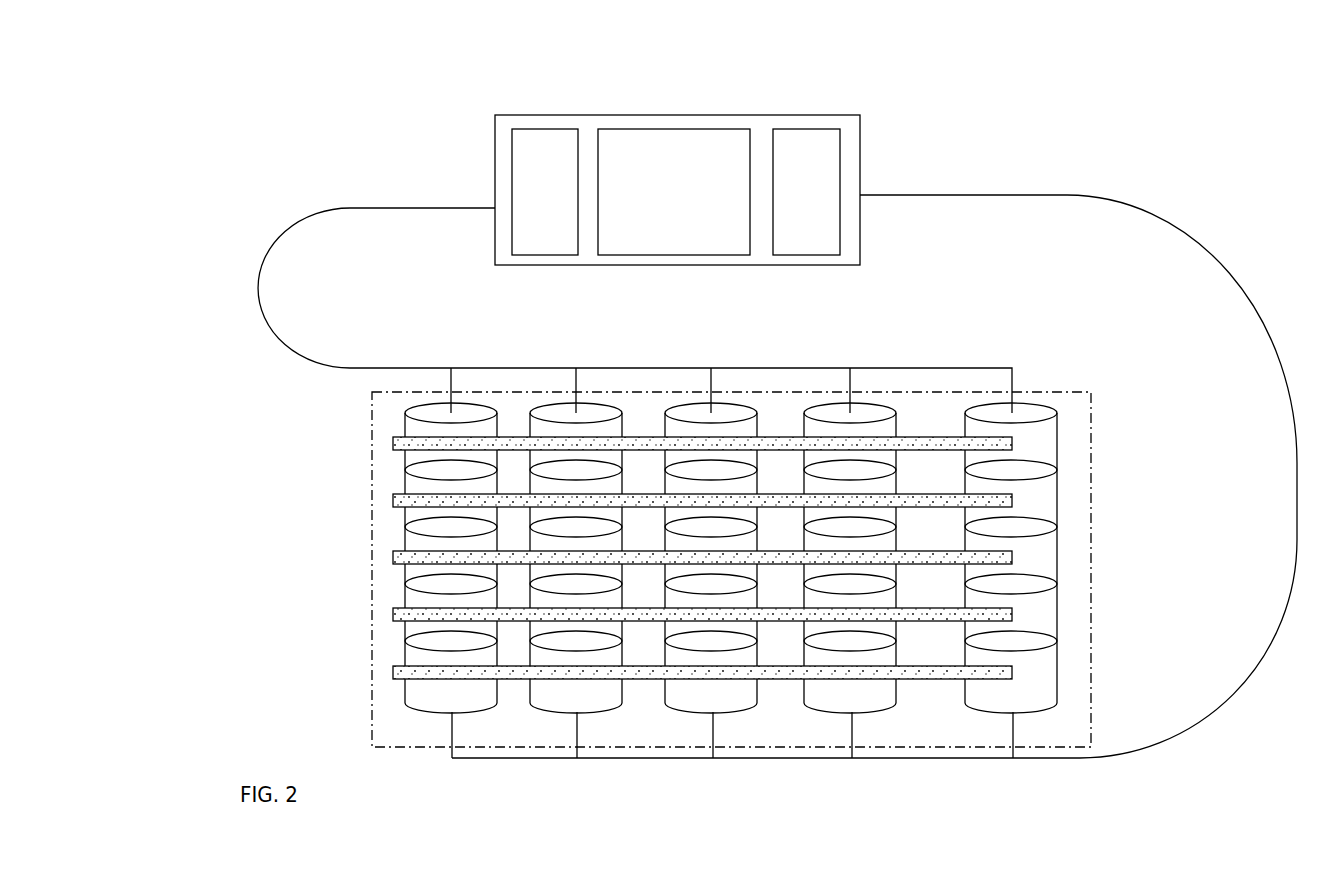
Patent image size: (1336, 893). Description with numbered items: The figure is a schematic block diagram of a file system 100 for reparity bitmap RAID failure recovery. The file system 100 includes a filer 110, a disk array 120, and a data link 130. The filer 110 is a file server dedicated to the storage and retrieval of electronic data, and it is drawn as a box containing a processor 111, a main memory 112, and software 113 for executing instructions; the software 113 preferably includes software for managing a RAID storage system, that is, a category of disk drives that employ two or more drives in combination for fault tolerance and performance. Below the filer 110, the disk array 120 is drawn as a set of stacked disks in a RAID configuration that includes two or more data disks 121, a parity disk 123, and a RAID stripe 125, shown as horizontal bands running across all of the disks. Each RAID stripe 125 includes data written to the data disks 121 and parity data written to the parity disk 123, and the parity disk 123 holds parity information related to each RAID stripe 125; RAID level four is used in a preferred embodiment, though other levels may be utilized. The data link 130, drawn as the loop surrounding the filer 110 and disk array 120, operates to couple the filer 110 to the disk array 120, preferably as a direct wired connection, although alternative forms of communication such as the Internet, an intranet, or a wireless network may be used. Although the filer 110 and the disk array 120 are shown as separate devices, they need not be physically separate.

The file system 100 is at (1030, 96).
The filer 110 is at (677, 155).
The processor 111 is at (545, 192).
The main memory 112 is at (674, 192).
The software 113 is at (806, 192).
The disk array 120 is at (677, 614).
The data disk 121 is at (487, 688).
The parity disk 123 is at (1108, 607).
The RAID stripe 125 is at (573, 524).
The data link 130 is at (705, 449).